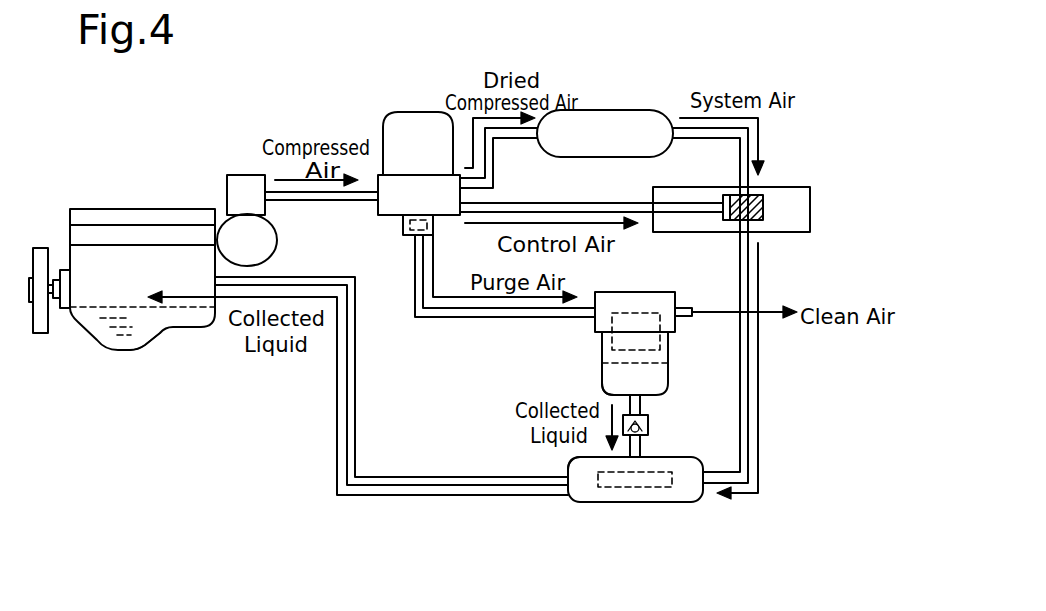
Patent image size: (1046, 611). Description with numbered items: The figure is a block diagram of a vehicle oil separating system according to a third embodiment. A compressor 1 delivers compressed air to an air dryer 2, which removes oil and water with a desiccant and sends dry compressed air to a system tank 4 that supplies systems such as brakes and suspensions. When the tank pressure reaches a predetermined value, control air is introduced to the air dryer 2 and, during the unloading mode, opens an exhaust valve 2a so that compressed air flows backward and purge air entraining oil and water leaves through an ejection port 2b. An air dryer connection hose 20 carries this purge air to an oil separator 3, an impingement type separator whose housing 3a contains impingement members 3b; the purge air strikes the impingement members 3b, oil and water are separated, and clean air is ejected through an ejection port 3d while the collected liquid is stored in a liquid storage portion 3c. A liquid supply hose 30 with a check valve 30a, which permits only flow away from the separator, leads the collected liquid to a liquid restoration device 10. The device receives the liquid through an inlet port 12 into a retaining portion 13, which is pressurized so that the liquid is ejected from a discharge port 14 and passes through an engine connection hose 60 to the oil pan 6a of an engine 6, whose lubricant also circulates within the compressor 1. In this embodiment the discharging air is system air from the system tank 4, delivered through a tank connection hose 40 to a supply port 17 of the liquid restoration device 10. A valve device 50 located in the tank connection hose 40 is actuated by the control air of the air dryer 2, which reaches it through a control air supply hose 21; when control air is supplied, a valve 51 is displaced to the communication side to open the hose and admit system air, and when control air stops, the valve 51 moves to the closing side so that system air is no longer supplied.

The compressor 1 is at (247, 175).
The air dryer 2 is at (430, 112).
The exhaust valve 2a is at (403, 228).
The ejection port 2b is at (432, 237).
The oil separator 3 is at (686, 292).
The housing 3a is at (602, 350).
The impingement members 3b is at (645, 313).
The liquid storage portion 3c is at (604, 390).
The ejection port 3d is at (686, 317).
The system tank 4 is at (626, 110).
The engine 6 is at (140, 209).
The oil pan 6a is at (173, 345).
The liquid restoration device 10 is at (688, 452).
The inlet port 12 is at (650, 452).
The retaining portion 13 is at (615, 488).
The discharge port 14 is at (570, 463).
The supply port 17 is at (707, 503).
The air dryer connection hose 20 is at (414, 280).
The control air supply hose 21 is at (620, 194).
The liquid supply hose 30 is at (645, 398).
The check valve 30a is at (650, 428).
The tank connection hose 40 is at (740, 388).
The valve device 50 is at (797, 187).
The valve 51 is at (760, 222).
The engine connection hose 60 is at (357, 360).